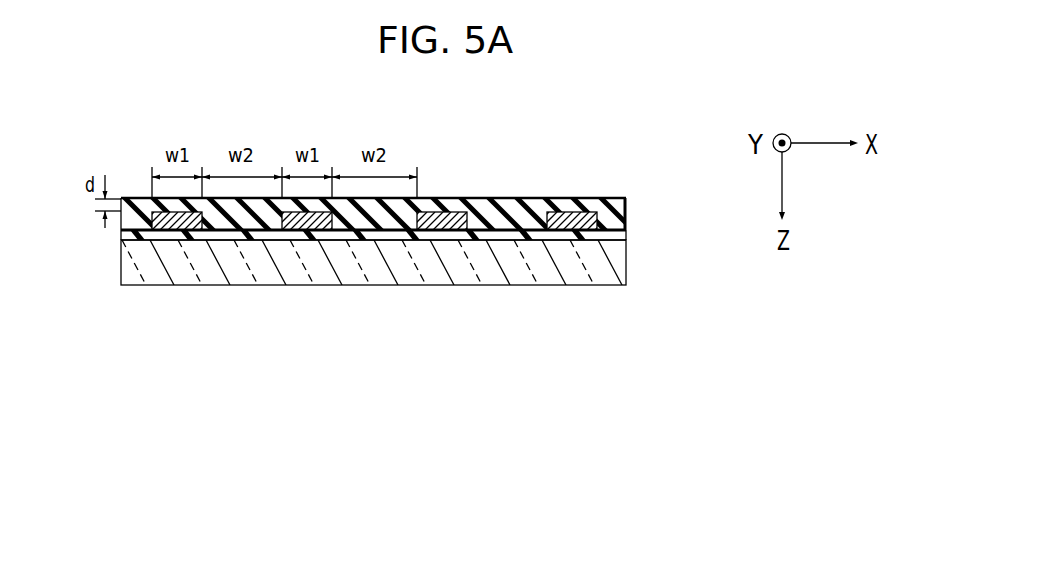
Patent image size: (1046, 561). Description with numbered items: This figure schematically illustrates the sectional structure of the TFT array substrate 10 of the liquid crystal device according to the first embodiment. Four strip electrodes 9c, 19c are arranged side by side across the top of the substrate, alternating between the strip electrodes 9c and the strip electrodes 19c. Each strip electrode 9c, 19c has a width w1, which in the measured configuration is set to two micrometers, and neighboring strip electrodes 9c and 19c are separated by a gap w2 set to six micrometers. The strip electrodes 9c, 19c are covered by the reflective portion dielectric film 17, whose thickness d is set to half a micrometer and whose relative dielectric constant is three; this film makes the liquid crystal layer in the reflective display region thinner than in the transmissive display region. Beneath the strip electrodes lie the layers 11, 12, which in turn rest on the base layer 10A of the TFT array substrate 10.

The TFT array substrate 10 is at (640, 161).
The substrate 10A is at (627, 266).
The first layer 11 is at (415, 238).
The second layer 12 is at (627, 235).
The reflective portion dielectric film 17 is at (472, 208).
The strip electrode 9c is at (170, 227).
The strip electrode 19c is at (292, 227).